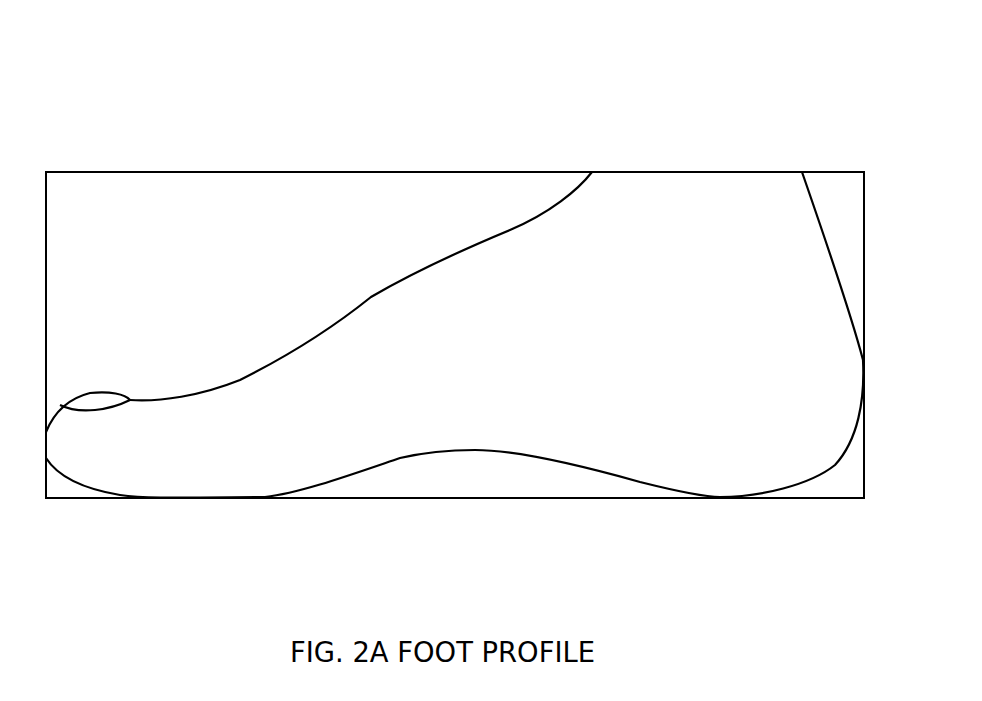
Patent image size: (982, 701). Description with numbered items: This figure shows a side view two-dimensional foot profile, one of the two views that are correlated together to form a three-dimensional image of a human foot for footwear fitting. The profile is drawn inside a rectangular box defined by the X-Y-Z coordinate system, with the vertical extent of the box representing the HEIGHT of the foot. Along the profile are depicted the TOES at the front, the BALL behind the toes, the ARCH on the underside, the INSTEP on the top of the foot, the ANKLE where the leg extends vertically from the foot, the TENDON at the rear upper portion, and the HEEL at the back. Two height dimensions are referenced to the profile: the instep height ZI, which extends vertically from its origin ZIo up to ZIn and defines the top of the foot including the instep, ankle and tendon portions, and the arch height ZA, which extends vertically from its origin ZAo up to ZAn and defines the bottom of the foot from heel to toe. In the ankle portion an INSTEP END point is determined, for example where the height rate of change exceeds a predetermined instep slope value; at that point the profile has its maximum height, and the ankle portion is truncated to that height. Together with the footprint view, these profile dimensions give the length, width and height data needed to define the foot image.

The instep height dimension end ZIn is at (807, 62).
The instep height dimension origin ZIo is at (850, 62).
The arch height dimension end ZAn is at (805, 101).
The arch height dimension origin ZAo is at (845, 101).
The instep INSTEP is at (371, 297).
The instep end point INSTEP END is at (592, 172).
The ankle ANKLE is at (643, 172).
The tendon TENDON is at (830, 258).
The heel HEEL is at (864, 385).
The arch ARCH is at (506, 450).
The toes TOES is at (46, 447).
The ball BALL is at (212, 497).
The height HEIGHT is at (46, 304).
The instep height ZI is at (423, 188).
The arch height ZA is at (422, 575).